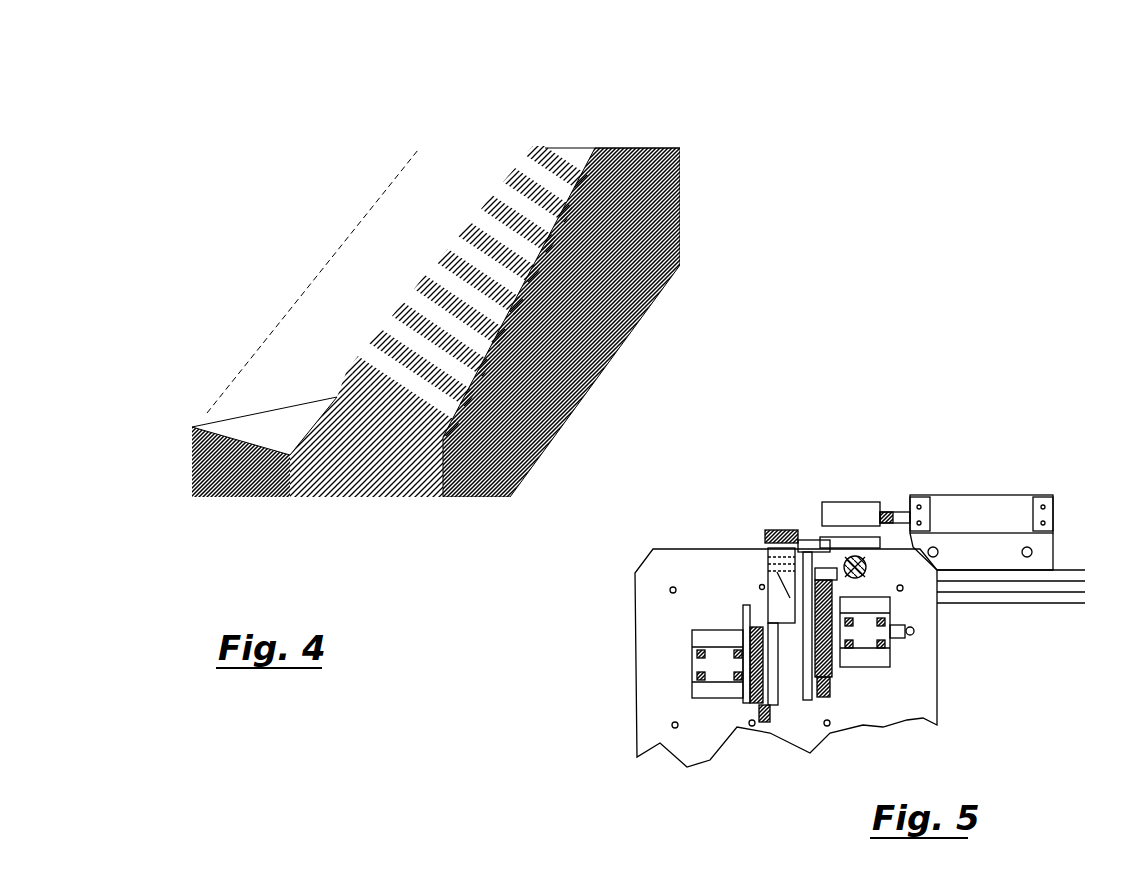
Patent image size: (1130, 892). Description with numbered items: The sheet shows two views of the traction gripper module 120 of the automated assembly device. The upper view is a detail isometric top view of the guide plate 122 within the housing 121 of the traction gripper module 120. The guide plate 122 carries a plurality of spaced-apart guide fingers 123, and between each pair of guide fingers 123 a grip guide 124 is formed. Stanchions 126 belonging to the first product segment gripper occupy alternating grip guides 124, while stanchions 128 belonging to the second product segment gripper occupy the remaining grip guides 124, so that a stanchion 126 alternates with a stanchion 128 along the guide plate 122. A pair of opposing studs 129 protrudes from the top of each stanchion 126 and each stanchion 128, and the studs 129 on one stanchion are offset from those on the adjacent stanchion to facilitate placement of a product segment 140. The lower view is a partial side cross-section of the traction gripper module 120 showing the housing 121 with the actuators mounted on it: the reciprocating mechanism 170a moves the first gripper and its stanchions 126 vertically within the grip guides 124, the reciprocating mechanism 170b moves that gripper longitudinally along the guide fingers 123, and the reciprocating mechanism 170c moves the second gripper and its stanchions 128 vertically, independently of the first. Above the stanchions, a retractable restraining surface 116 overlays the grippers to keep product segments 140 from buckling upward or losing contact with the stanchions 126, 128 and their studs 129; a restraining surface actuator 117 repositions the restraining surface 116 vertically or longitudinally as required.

In FIG. 5, the restraining surface 116 is at (857, 518).
In FIG. 5, the restraining surface actuator 117 is at (982, 518).
In FIG. 5, the traction gripper module 120 is at (673, 662).
In FIG. 5, the housing 121 is at (662, 635).
In FIG. 4, the guide plate 122 is at (273, 408).
In FIG. 5, the guide plate 122 is at (812, 540).
In FIG. 4, the guide fingers 123 is at (377, 407).
In FIG. 4, the grip guide 124 is at (407, 407).
In FIG. 4, the stanchions 126 is at (395, 347).
In FIG. 5, the stanchions 126 is at (792, 560).
In FIG. 4, the stanchions 128 is at (378, 345).
In FIG. 5, the stanchions 128 is at (768, 548).
In FIG. 4, the opposing studs 129 is at (480, 275).
In FIG. 4, the product segment 140 is at (606, 188).
In FIG. 5, the reciprocating mechanism 170a is at (837, 667).
In FIG. 5, the reciprocating mechanism 170b is at (908, 629).
In FIG. 5, the reciprocating mechanism 170c is at (745, 625).